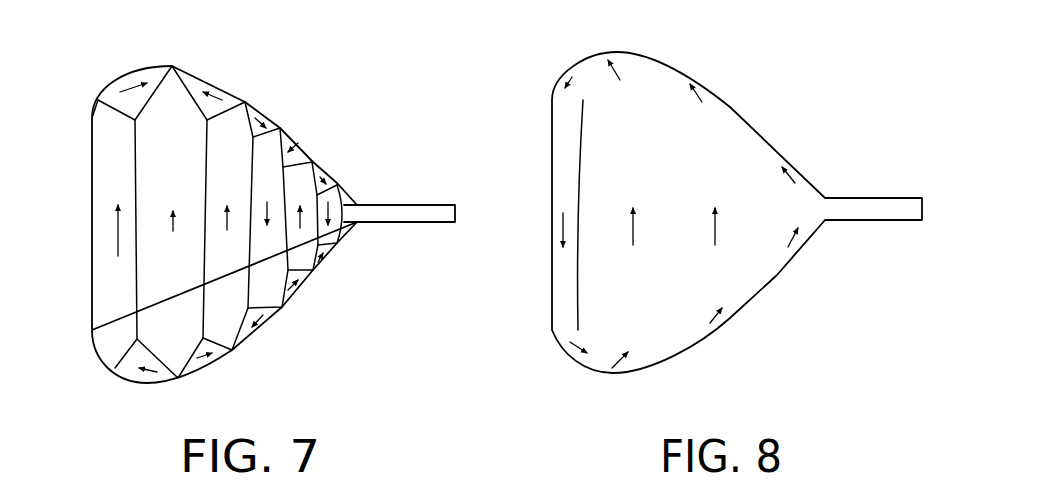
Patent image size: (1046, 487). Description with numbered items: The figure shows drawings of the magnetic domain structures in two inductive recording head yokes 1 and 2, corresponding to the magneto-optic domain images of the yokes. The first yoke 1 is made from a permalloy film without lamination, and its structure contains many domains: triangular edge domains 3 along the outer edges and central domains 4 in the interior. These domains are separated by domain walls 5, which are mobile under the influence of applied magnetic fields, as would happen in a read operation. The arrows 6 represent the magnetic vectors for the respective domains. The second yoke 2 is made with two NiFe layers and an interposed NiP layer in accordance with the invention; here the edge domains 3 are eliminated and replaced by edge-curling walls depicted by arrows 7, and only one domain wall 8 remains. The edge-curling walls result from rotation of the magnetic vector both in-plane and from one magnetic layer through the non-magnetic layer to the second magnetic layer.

In FIG. 7, the inductive recording head yoke 1 is at (338, 186).
In FIG. 8, the inductive recording head yoke 2 is at (775, 277).
In FIG. 7, the triangular edge domains 3 is at (170, 74).
In FIG. 7, the central domains 4 is at (147, 310).
In FIG. 7, the domain walls 5 is at (207, 153).
In FIG. 7, the arrows 6 is at (172, 213).
In FIG. 8, the arrows 7 is at (722, 105).
In FIG. 8, the domain wall 8 is at (582, 262).